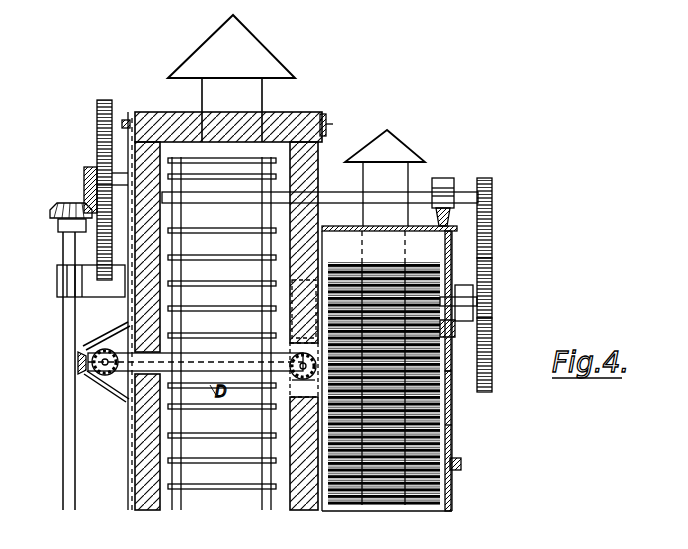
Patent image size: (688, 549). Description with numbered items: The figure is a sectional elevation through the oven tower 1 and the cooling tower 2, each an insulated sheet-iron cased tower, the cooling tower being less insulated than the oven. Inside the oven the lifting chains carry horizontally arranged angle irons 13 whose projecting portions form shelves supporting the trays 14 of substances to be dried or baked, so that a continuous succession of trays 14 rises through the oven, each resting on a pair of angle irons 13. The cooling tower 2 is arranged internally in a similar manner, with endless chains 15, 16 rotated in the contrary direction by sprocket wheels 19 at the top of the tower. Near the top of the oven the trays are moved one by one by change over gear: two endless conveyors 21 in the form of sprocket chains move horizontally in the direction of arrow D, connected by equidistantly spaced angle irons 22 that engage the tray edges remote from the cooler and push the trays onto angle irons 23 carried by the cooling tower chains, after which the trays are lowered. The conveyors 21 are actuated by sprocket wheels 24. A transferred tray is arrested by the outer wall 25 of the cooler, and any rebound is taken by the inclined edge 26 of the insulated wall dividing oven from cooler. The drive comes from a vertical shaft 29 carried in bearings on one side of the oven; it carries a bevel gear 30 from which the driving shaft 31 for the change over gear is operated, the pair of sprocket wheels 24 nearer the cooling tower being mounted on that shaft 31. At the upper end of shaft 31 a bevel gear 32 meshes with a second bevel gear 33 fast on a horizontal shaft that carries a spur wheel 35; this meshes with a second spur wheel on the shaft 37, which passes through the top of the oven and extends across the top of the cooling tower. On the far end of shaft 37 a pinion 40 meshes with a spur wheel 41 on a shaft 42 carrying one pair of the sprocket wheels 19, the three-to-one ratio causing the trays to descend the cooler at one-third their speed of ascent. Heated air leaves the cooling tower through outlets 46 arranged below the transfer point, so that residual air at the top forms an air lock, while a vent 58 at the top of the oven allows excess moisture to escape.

The oven tower 1 is at (136, 478).
The cooling tower 2 is at (452, 492).
The angle irons 13 is at (225, 196).
The trays 14 is at (210, 494).
The endless chain 15 is at (445, 448).
The endless chain 16 is at (318, 505).
The sprocket wheels 19 is at (488, 332).
The endless conveyors 21 is at (118, 392).
The angle irons 22 is at (122, 336).
The angle irons 23 is at (445, 432).
The sprocket wheels 24 is at (48, 412).
The outer wall 25 is at (452, 397).
The inclined edge 26 is at (292, 405).
The vertical shaft 29 is at (62, 470).
The bevel gear 30 is at (90, 372).
The driving shaft 31 is at (295, 352).
The bevel gear 32 is at (56, 213).
The second bevel gear 33 is at (84, 177).
The spur wheel 35 is at (97, 121).
The shaft 37 is at (428, 182).
The pinion 40 is at (493, 193).
The spur wheel 41 is at (493, 262).
The shaft 42 is at (488, 300).
The outlets 46 is at (400, 475).
The vent 58 is at (258, 100).